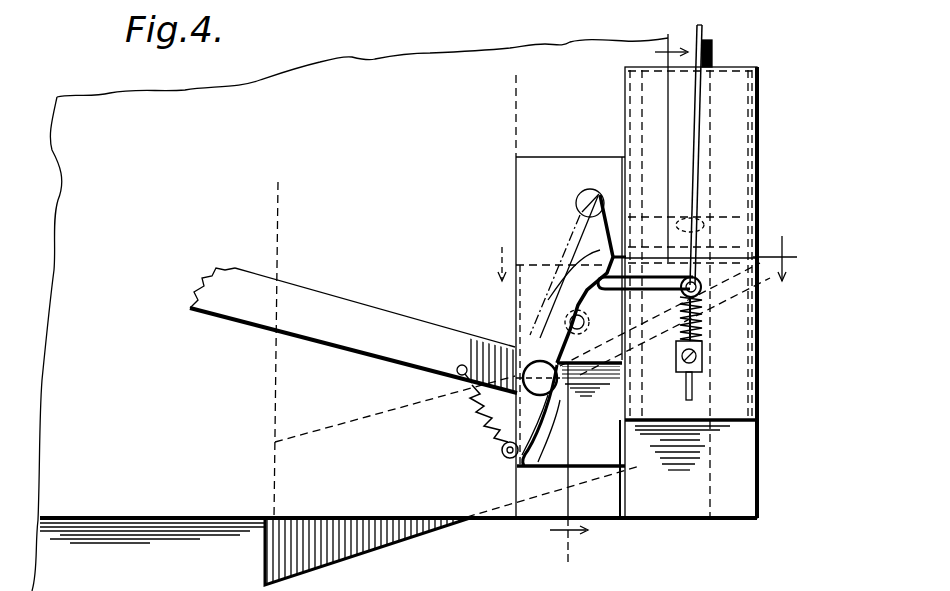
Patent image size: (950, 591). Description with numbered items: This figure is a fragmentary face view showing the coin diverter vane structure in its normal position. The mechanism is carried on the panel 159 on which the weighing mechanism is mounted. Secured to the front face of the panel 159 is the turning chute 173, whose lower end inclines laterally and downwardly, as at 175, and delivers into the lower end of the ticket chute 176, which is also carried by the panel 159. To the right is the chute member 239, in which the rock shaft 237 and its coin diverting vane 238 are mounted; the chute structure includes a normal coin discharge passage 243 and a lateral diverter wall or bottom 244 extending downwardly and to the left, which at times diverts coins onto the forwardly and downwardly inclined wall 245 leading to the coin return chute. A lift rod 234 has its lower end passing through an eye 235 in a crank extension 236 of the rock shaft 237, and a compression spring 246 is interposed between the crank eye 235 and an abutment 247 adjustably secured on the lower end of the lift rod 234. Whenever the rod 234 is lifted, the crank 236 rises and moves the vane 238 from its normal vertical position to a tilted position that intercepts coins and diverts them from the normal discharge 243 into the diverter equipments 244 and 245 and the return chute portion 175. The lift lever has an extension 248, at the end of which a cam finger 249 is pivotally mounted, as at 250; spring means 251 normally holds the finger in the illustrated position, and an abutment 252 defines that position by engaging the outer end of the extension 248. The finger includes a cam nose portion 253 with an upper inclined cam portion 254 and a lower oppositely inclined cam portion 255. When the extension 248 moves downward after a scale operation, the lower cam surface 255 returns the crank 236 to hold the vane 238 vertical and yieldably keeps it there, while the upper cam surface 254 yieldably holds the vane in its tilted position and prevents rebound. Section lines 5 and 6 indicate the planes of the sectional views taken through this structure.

The section line 5- 5 is at (632, 247).
The section line 6- 6 is at (619, 292).
The panel 159 is at (322, 390).
The turning chute 173 is at (510, 108).
The laterally and downwardly inclined lower end of the turning chute 175 is at (297, 535).
The ticket chute 176 is at (272, 190).
The lift rod 234 is at (697, 148).
The eye 235 is at (753, 283).
The crank extension 236 is at (570, 308).
The rock shaft 237 is at (762, 216).
The coin diverting vane 238 is at (732, 80).
The chute member 239 is at (760, 105).
The normal coin discharge passage 243 is at (722, 505).
The lateral diverter wall 244 is at (700, 326).
The forwardly and downwardly inclined wall 245 is at (520, 472).
The compression spring 246 is at (745, 355).
The abutment 247 is at (702, 372).
The extension 248 is at (330, 278).
The cam finger 249 is at (613, 257).
The pivot 250 is at (480, 387).
The spring means 251 is at (482, 420).
The abutment 252 is at (505, 448).
The cam nose portion 253 is at (612, 232).
The upper inclined cam portion 254 is at (600, 220).
The lower oppositely inclined cam portion 255 is at (590, 278).